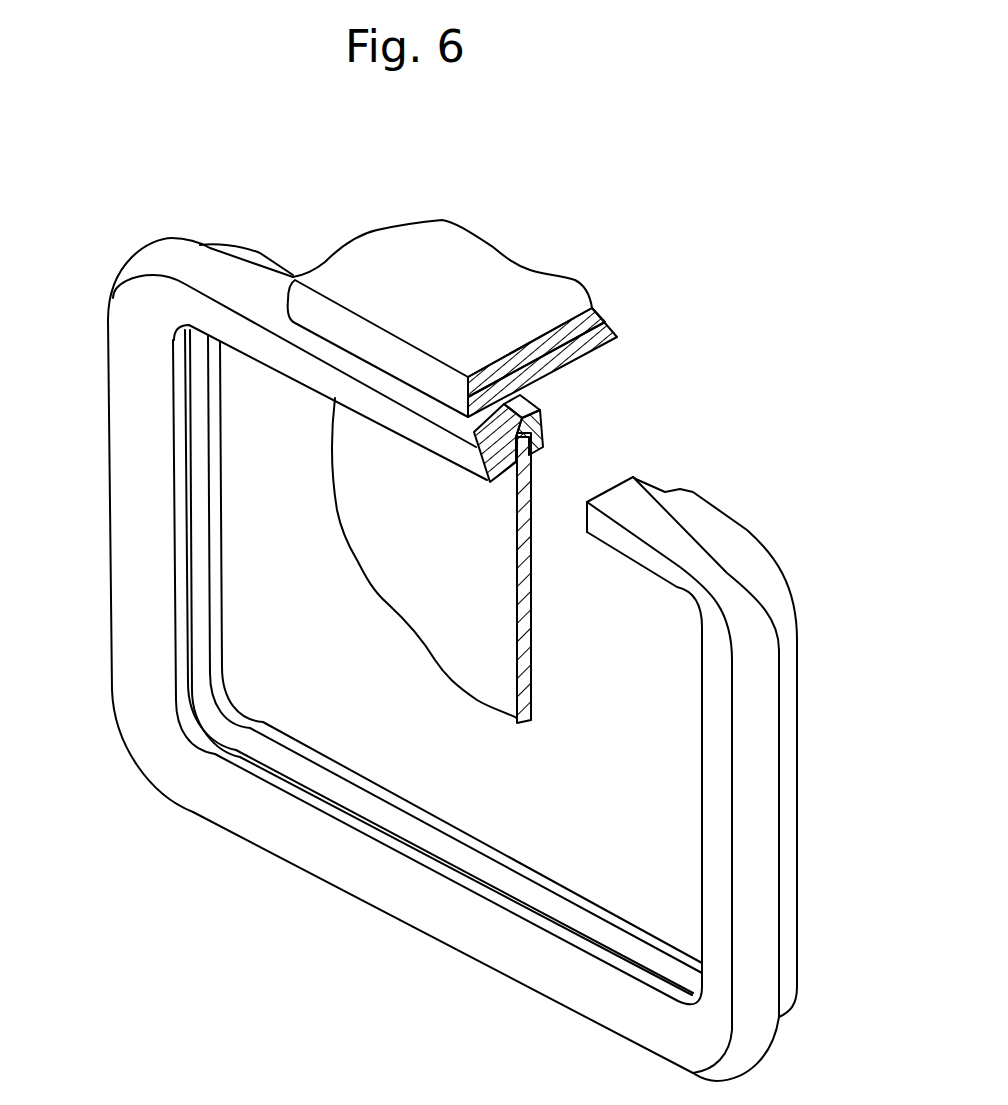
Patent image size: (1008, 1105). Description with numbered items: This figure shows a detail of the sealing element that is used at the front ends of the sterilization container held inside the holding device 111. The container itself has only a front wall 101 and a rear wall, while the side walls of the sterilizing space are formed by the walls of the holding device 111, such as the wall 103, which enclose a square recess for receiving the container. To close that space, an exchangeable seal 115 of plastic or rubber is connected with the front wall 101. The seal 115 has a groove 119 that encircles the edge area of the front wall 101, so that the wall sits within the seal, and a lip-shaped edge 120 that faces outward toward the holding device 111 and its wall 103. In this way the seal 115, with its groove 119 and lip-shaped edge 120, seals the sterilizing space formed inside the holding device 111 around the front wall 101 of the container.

The front wall 101 is at (358, 437).
The wall 103 is at (590, 352).
The holding device 111 is at (596, 311).
The seal 115 is at (758, 883).
The groove 119 is at (532, 455).
The lip-shaped edge 120 is at (125, 258).